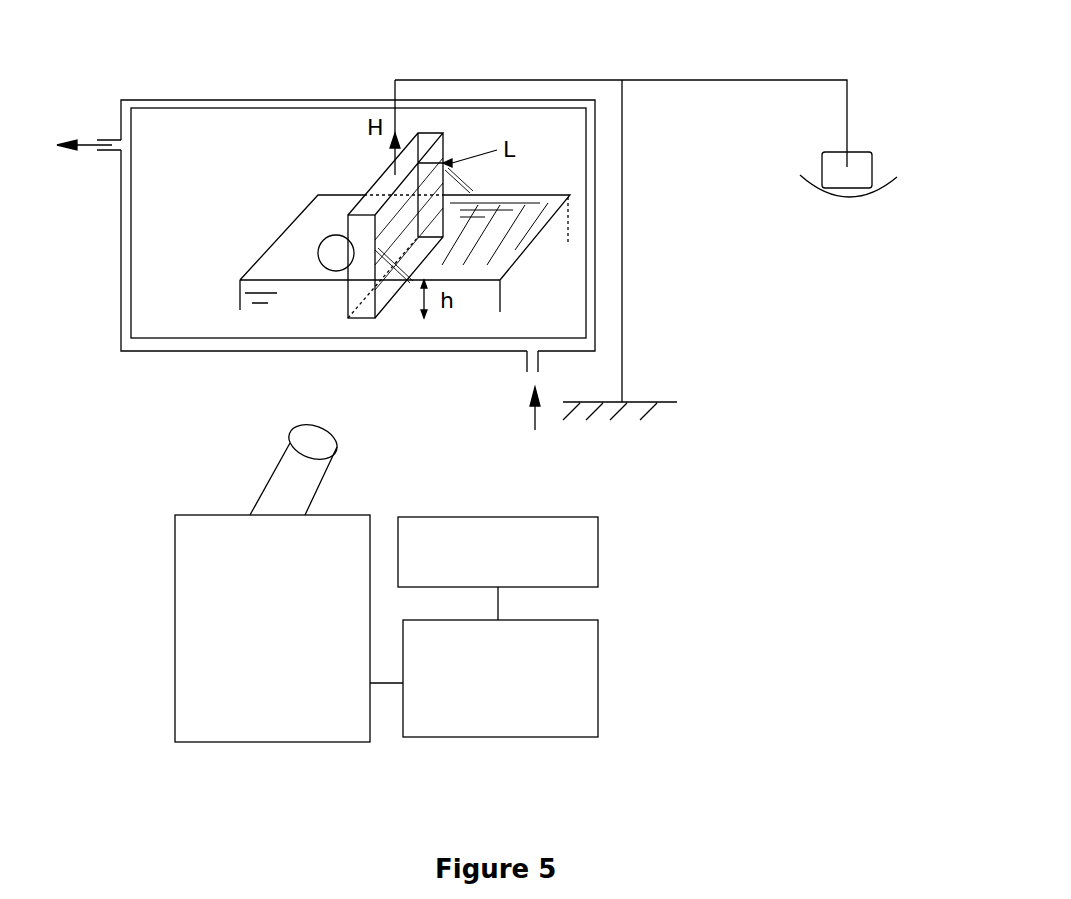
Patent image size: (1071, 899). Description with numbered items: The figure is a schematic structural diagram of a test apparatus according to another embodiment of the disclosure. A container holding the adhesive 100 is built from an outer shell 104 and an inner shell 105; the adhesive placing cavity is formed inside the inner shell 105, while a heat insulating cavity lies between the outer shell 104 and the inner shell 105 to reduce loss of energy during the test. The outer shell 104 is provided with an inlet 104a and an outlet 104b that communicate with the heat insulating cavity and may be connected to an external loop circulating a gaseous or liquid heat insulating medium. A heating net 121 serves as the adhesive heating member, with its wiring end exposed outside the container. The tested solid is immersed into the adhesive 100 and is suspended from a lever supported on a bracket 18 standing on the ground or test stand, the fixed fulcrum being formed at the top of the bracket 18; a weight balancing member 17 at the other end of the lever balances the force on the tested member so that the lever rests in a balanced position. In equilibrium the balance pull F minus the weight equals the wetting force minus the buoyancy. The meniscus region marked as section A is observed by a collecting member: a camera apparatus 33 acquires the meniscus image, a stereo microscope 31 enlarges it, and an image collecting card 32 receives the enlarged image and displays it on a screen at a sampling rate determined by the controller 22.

The outer shell 104 is at (330, 351).
The inner shell 105 is at (172, 338).
The outlet 104b is at (115, 140).
The inlet 104a is at (527, 353).
The adhesive 100 is at (240, 297).
The heating net 121 is at (568, 196).
The section A is at (326, 243).
The balance pull F is at (393, 152).
The bracket 18 is at (623, 240).
The weight balancing member 17 is at (860, 172).
The controller 22 is at (500, 280).
The image collecting card 32 is at (545, 692).
The stereo microscope 31 is at (195, 657).
The camera apparatus 33 is at (263, 488).